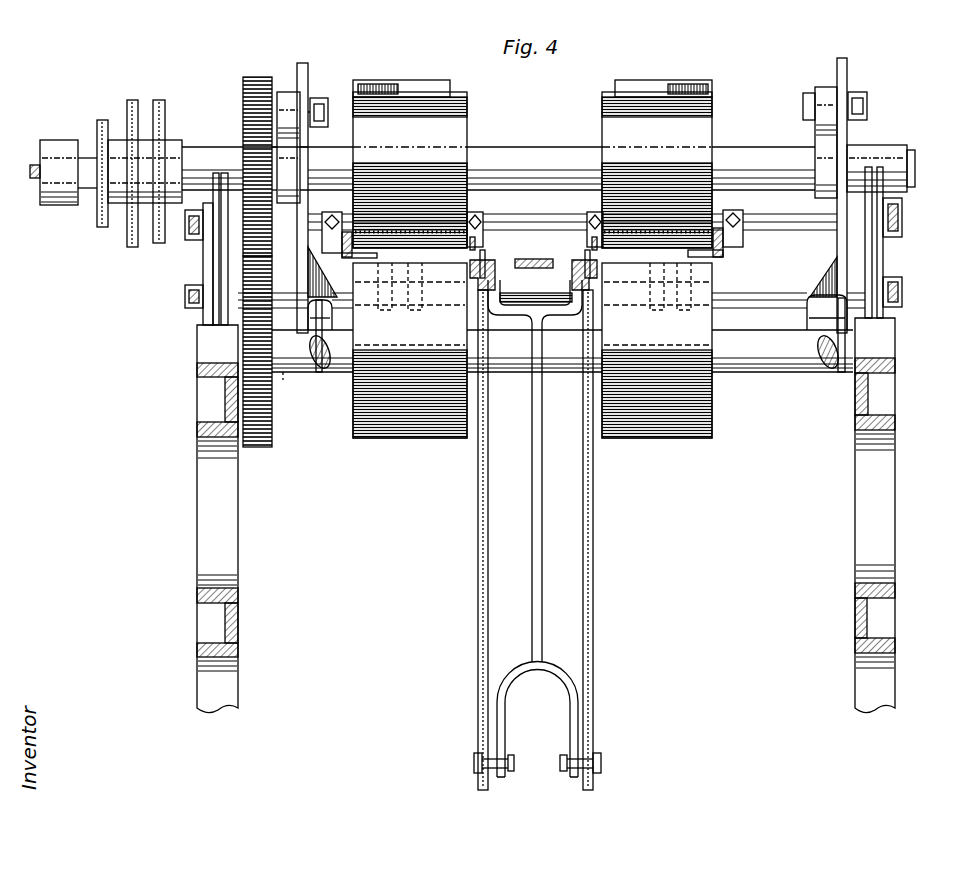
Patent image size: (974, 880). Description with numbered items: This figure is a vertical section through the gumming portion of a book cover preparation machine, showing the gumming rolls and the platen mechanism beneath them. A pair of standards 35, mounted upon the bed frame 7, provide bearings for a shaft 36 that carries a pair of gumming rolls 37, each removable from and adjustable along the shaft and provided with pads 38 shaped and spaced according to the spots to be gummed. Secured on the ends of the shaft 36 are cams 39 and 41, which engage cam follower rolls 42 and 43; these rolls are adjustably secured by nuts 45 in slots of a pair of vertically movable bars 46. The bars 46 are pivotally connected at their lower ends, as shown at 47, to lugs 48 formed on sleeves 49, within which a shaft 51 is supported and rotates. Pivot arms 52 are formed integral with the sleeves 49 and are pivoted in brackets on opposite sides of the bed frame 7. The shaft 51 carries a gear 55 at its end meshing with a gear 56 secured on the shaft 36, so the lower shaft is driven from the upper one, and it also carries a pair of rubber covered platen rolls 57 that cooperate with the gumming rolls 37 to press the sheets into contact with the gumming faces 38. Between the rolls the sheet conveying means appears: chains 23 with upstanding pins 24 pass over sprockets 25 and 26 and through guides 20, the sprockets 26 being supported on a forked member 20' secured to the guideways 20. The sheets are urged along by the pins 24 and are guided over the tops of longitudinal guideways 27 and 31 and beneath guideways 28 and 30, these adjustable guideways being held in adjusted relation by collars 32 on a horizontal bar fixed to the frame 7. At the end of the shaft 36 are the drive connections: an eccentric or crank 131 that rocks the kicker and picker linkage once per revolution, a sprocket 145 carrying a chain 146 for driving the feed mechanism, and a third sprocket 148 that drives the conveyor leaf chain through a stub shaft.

The bed frame 7 is at (197, 436).
The guides 20 is at (533, 301).
The forked member 20' is at (535, 528).
The chains 23 is at (478, 540).
The upstanding pins 24 is at (500, 262).
The sprockets 25 is at (535, 268).
The sprockets 26 is at (474, 764).
The longitudinal guideway 27 is at (722, 253).
The longitudinal guideway 28 is at (588, 250).
The longitudinal guideway 30 is at (486, 250).
The longitudinal guideway 31 is at (352, 257).
The collars 32 is at (770, 242).
The standards 35 is at (210, 265).
The shaft 36 is at (526, 150).
The gumming rolls 37 is at (467, 118).
The pads 38 is at (428, 82).
The cam 39 is at (832, 147).
The cam 41 is at (290, 150).
The cam follower roll 42 is at (816, 88).
The cam follower roll 43 is at (288, 92).
The nuts 45 is at (330, 92).
The vertically movable bars 46 is at (308, 63).
The pivotal connection 47 is at (340, 318).
The lugs 48 is at (316, 320).
The sleeves 49 is at (340, 374).
The shaft 51 is at (283, 375).
The pivot arms 52 is at (325, 366).
The gear 55 is at (262, 447).
The gear 56 is at (257, 77).
The platen rolls 57 is at (432, 438).
The eccentric or crank 131 is at (56, 146).
The sprocket 145 is at (133, 100).
The chain 146 is at (103, 120).
The third sprocket 148 is at (100, 215).